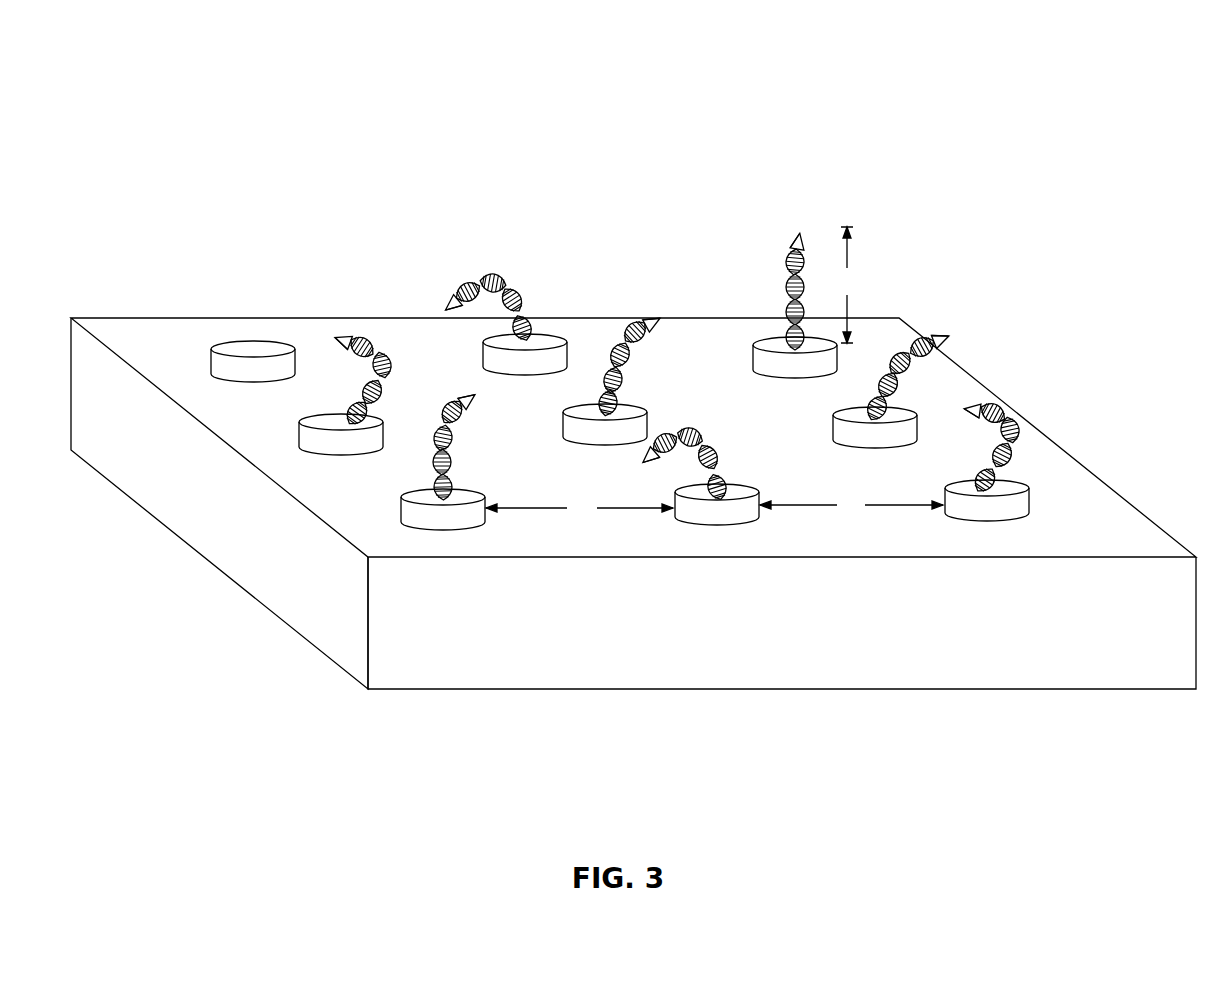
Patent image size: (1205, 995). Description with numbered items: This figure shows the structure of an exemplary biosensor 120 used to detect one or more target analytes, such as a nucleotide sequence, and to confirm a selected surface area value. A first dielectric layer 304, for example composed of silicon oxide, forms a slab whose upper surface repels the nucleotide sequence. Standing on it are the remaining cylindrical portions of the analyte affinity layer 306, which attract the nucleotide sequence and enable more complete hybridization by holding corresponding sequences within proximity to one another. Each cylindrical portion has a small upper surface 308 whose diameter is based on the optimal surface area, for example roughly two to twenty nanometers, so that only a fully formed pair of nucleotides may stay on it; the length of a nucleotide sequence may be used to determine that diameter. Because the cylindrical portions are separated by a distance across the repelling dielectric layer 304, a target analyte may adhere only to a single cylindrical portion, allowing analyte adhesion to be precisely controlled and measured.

The biosensor 120 is at (147, 59).
The first dielectric layer 304 is at (755, 646).
The analyte affinity layer 306 is at (425, 525).
The upper surface 308 is at (248, 347).